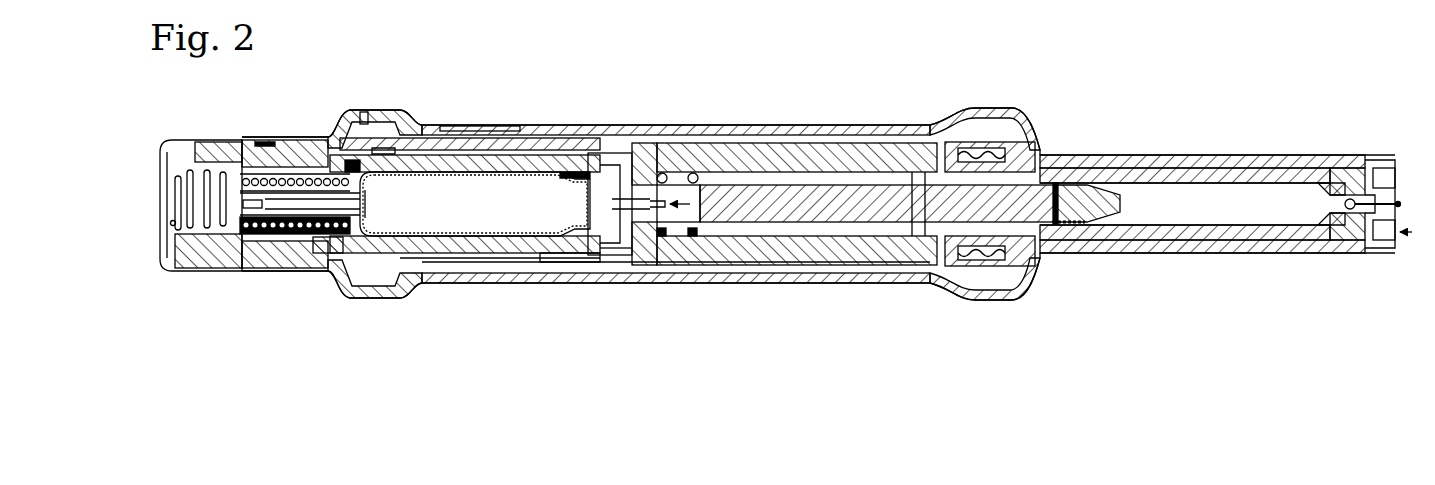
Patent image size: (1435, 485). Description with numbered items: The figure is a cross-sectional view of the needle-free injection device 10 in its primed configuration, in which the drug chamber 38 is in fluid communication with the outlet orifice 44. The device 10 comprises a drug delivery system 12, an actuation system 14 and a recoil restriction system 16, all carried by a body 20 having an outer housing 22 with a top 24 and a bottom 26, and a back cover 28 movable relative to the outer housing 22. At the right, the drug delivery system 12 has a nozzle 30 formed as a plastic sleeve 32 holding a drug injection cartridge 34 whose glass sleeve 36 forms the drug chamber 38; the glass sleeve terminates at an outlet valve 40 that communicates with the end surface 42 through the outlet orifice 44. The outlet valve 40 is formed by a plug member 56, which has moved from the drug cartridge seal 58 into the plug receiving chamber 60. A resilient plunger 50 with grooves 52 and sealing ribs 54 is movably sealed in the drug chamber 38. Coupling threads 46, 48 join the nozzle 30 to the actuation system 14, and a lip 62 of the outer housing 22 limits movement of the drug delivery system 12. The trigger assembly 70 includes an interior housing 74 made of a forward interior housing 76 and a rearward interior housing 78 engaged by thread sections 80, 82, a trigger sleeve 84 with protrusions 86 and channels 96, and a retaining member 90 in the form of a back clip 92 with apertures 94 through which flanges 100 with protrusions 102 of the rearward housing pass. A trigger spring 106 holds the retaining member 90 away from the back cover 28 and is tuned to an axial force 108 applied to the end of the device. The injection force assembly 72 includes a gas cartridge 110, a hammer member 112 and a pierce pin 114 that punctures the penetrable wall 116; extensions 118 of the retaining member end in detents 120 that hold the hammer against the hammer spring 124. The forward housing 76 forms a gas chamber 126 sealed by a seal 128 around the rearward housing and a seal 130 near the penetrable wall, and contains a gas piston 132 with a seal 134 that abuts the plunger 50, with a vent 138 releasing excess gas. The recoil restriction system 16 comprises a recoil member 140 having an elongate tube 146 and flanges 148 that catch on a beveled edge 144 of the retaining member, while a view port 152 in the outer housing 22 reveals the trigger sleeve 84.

The device 10 is at (1205, 58).
The drug delivery system 12 is at (1176, 320).
The actuation system 14 is at (691, 333).
The recoil restriction system 16 is at (280, 336).
The body 20 is at (634, 100).
The outer housing 22 is at (655, 124).
The top 24 is at (768, 125).
The bottom 26 is at (742, 280).
The back cover 28 is at (212, 273).
The nozzle 30 is at (1172, 152).
The plastic sleeve 32 is at (1243, 157).
The drug injection cartridge 34 is at (1152, 238).
The glass sleeve 36 is at (1192, 240).
The drug chamber 38 is at (1185, 207).
The outlet valve 40 is at (1339, 174).
The end surface 42 is at (1378, 160).
The outlet orifice 44 is at (1388, 240).
The coupling thread 46 is at (978, 158).
The coupling thread 48 is at (962, 140).
The plunger 50 is at (1070, 187).
The grooves 52 is at (1066, 226).
The sealing ribs 54 is at (1078, 228).
The plug member 56 is at (1336, 200).
The drug cartridge seal 58 is at (1318, 218).
The plug receiving chamber 60 is at (1355, 208).
The lip 62 is at (1030, 135).
The trigger assembly 70 is at (396, 118).
The injection force assembly 72 is at (490, 170).
The interior housing 74 is at (555, 240).
The forward interior housing 76 is at (840, 250).
The rearward interior housing 78 is at (465, 245).
The thread section 80 is at (598, 252).
The thread section 82 is at (583, 250).
The trigger sleeve 84 is at (418, 140).
The protrusions 86 is at (370, 128).
The retaining member 90 is at (263, 140).
The back clip 92 is at (240, 195).
The apertures 94 is at (240, 180).
The channels 96 is at (380, 152).
The flanges 100 is at (256, 158).
The protrusions 102 is at (308, 148).
The trigger spring 106 is at (173, 226).
The axial force 108 is at (1400, 172).
The gas cartridge 110 is at (475, 204).
The hammer member 112 is at (358, 170).
The pierce pin 114 is at (612, 204).
The penetrable wall 116 is at (592, 188).
The extensions 118 is at (315, 222).
The detents 120 is at (360, 230).
The hammer spring 124 is at (258, 230).
The gas chamber 126 is at (690, 200).
The seal 128 is at (665, 238).
The seal 130 is at (573, 173).
The gas piston 132 is at (842, 195).
The seal 134 is at (695, 238).
The vent 138 is at (920, 264).
The recoil member 140 is at (274, 212).
The beveled edge 144 is at (237, 232).
The elongate tube 146 is at (372, 204).
The flanges 148 is at (228, 183).
The view port 152 is at (490, 127).